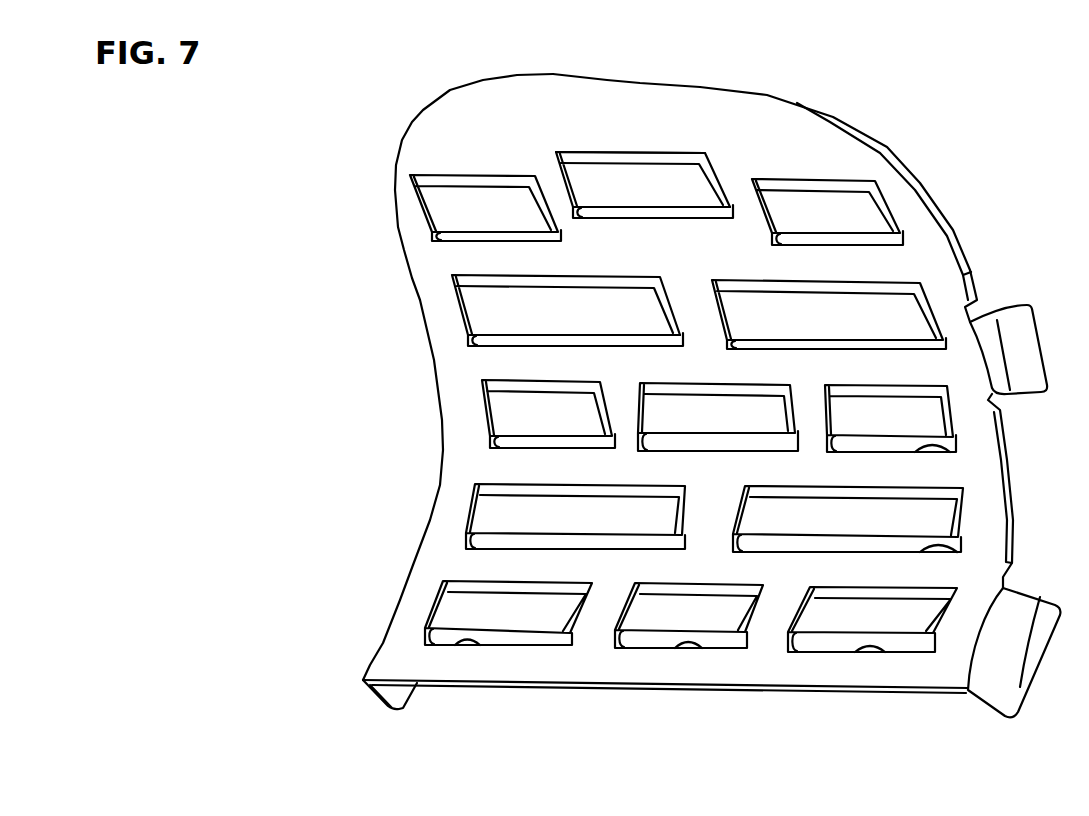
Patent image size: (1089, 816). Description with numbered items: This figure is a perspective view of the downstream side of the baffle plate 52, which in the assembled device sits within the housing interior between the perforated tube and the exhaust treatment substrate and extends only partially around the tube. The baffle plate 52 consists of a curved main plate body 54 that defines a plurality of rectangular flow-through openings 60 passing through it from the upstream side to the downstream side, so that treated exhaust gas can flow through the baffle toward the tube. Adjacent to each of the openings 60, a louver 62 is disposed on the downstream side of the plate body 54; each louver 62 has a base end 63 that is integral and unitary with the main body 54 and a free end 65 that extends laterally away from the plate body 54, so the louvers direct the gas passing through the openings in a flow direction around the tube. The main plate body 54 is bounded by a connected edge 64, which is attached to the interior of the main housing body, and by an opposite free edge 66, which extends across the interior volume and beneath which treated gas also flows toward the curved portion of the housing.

The baffle plate 52 is at (428, 361).
The main plate body 54 is at (468, 103).
The flow-through openings 60 is at (890, 242).
The louvers 62 is at (485, 205).
The base ends 63 is at (624, 152).
The connected edge 64 is at (637, 82).
The free ends 65 is at (634, 208).
The free edge 66 is at (525, 690).